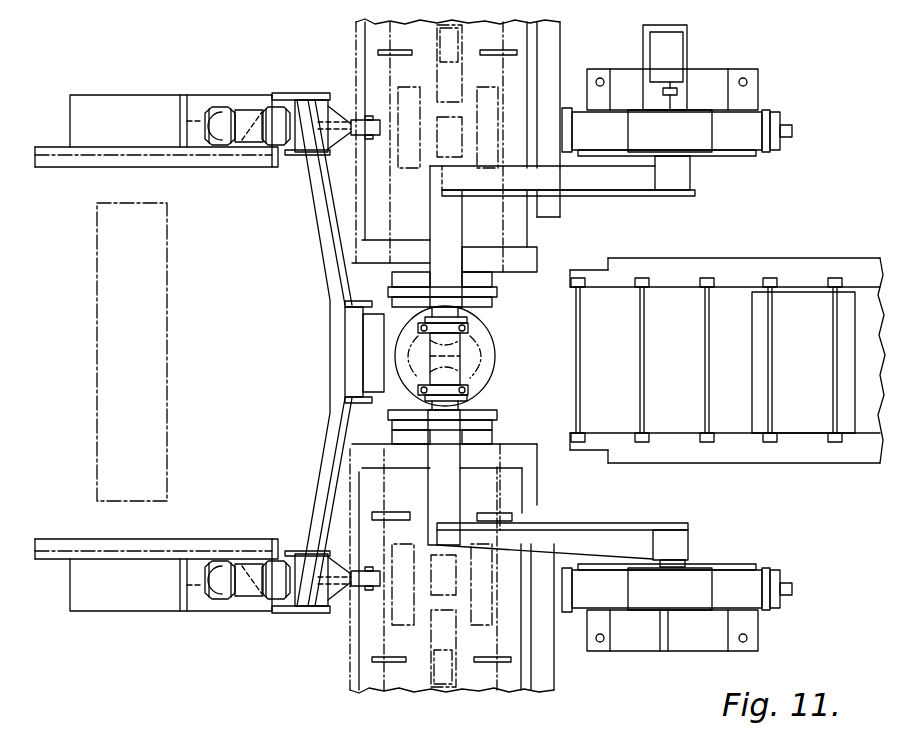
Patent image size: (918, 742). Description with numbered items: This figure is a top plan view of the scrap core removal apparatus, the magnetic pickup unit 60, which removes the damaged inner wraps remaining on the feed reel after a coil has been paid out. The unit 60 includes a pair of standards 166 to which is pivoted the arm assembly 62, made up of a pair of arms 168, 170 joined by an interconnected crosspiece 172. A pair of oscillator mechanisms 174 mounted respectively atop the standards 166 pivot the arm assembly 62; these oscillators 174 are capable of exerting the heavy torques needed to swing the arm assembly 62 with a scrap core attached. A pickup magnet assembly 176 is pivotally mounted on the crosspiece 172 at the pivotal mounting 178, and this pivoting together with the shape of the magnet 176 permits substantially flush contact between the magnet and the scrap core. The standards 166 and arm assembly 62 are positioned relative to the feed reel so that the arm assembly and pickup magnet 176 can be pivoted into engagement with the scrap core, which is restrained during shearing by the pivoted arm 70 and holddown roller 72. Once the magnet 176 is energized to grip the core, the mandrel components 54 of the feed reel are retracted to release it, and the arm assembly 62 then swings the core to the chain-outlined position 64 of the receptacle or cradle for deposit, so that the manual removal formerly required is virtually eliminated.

The mandrel components 54 is at (478, 361).
The magnetic pickup unit 60 is at (804, 200).
The arm assembly 62 is at (678, 197).
The chain-outlined position 64 is at (752, 310).
The pivoted arm 70 is at (337, 346).
The holddown roller 72 is at (370, 366).
The standards 166 is at (708, 78).
The arm 168 is at (583, 538).
The arm 170 is at (625, 172).
The crosspiece 172 is at (440, 223).
The oscillator mechanisms 174 is at (695, 134).
The pickup magnet assembly 176 is at (495, 356).
The pivotal mounting 178 is at (468, 331).